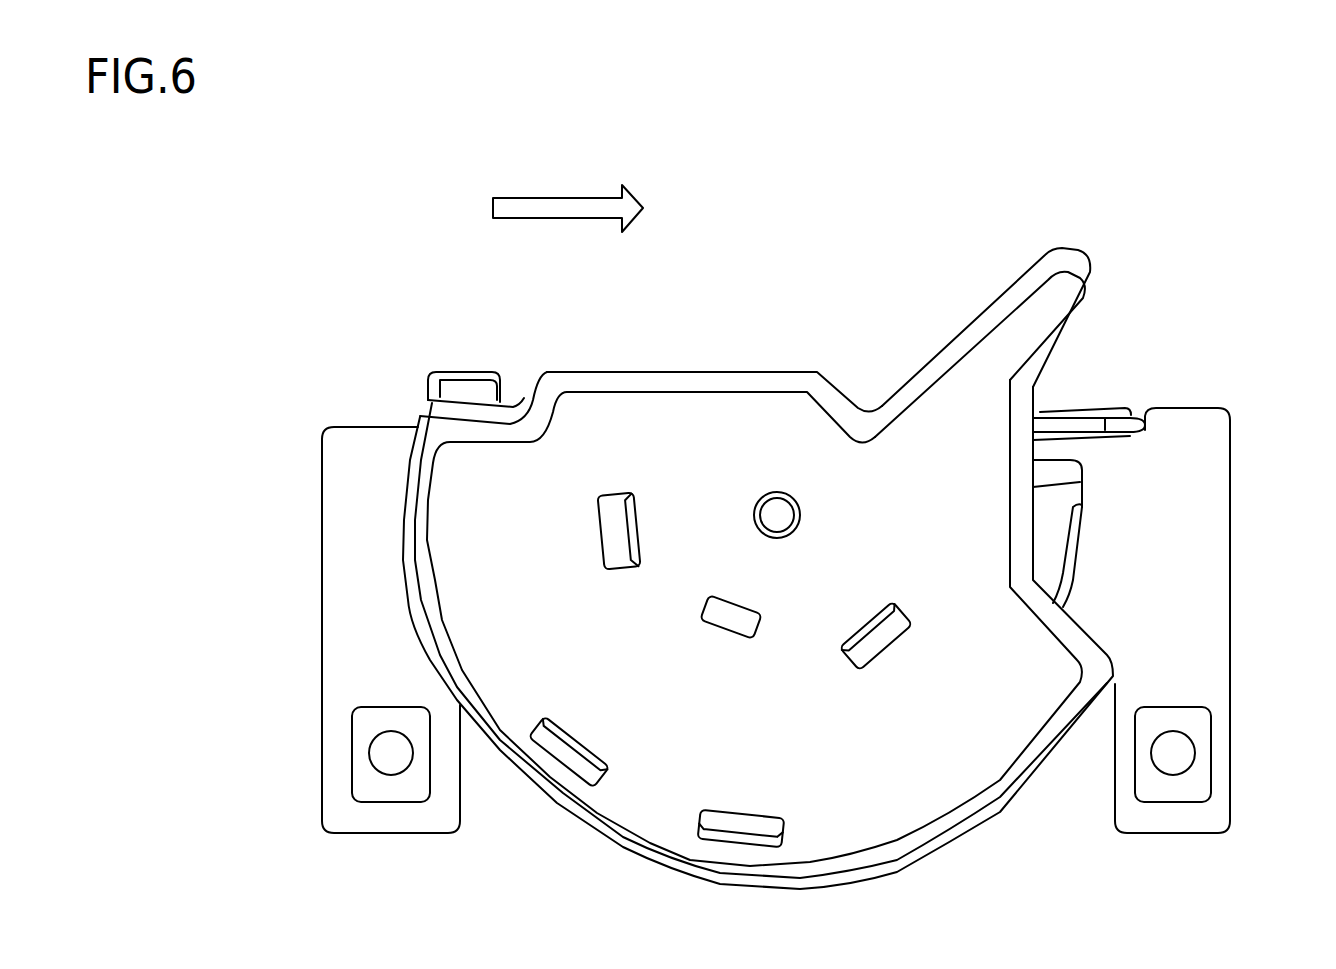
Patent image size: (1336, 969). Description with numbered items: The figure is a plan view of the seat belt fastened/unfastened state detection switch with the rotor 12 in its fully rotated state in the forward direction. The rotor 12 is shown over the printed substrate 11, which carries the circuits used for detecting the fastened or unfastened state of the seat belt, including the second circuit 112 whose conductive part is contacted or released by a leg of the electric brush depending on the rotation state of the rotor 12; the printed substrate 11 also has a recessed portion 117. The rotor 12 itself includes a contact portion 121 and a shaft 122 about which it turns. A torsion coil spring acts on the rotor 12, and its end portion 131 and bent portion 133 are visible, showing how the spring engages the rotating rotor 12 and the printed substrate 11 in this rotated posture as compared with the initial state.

The printed substrate 11 is at (372, 427).
The rotor 12 is at (710, 372).
The second circuit 112 is at (1057, 502).
The recessed portion 117 is at (1148, 406).
The contact portion 121 is at (1015, 277).
The shaft 122 is at (772, 492).
The end portion 131 is at (427, 386).
The bent portion 133 is at (1127, 408).